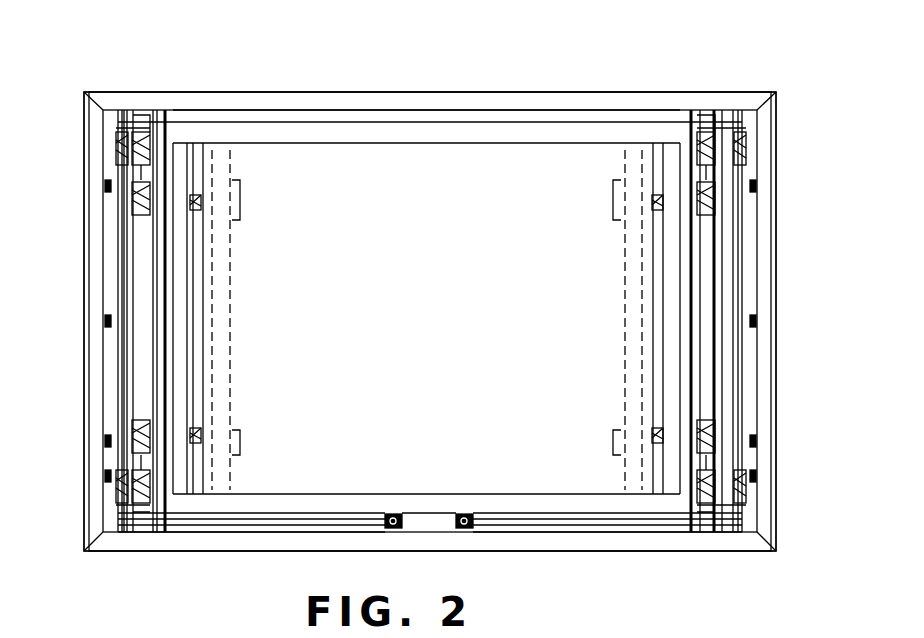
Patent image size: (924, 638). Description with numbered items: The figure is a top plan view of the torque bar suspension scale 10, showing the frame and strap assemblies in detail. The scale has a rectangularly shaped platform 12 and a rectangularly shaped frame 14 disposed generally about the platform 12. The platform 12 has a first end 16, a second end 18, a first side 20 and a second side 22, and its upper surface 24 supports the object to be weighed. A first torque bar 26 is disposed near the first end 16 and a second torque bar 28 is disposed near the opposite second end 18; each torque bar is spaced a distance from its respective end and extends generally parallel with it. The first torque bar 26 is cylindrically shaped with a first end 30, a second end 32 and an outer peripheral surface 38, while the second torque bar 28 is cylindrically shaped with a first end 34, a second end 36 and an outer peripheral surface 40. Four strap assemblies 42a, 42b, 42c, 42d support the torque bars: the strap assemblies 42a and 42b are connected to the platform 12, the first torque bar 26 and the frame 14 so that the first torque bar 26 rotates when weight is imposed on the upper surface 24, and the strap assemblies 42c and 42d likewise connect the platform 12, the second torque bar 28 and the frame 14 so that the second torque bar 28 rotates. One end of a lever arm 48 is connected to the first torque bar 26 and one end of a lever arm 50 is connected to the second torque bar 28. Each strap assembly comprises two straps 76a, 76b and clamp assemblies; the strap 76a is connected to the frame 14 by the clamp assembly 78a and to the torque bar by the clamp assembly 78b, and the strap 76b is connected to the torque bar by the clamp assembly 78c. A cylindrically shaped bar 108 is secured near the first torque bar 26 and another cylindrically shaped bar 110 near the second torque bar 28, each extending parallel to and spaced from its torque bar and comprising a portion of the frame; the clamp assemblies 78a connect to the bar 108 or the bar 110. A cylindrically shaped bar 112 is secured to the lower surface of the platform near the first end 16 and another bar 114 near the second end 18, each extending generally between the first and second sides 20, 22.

The torque bar suspension scale 10 is at (622, 62).
The platform 12 is at (512, 165).
The frame 14 is at (338, 92).
The first end 16 is at (165, 358).
The second end 18 is at (690, 300).
The first side 20 is at (432, 113).
The second side 22 is at (425, 518).
The upper surface 24 is at (362, 152).
The first torque bar 26 is at (140, 375).
The second torque bar 28 is at (740, 352).
The first end 30 is at (148, 120).
The second end 32 is at (140, 528).
The first end 34 is at (720, 115).
The second end 36 is at (720, 530).
The outer peripheral surface 38 is at (160, 283).
The outer peripheral surface 40 is at (705, 260).
The strap assembly 42a is at (116, 160).
The strap assembly 42b is at (112, 485).
The strap assembly 42c is at (758, 137).
The strap assembly 42d is at (758, 482).
The lever arm 48 is at (285, 530).
The lever arm 50 is at (530, 530).
The strap 76a is at (116, 150).
The strap 76b is at (200, 205).
The clamp assembly 78a is at (134, 180).
The clamp assembly 78b is at (160, 130).
The clamp assembly 78c is at (140, 220).
The bar 108 is at (118, 110).
The bar 110 is at (740, 110).
The bar 112 is at (232, 175).
The bar 114 is at (630, 175).